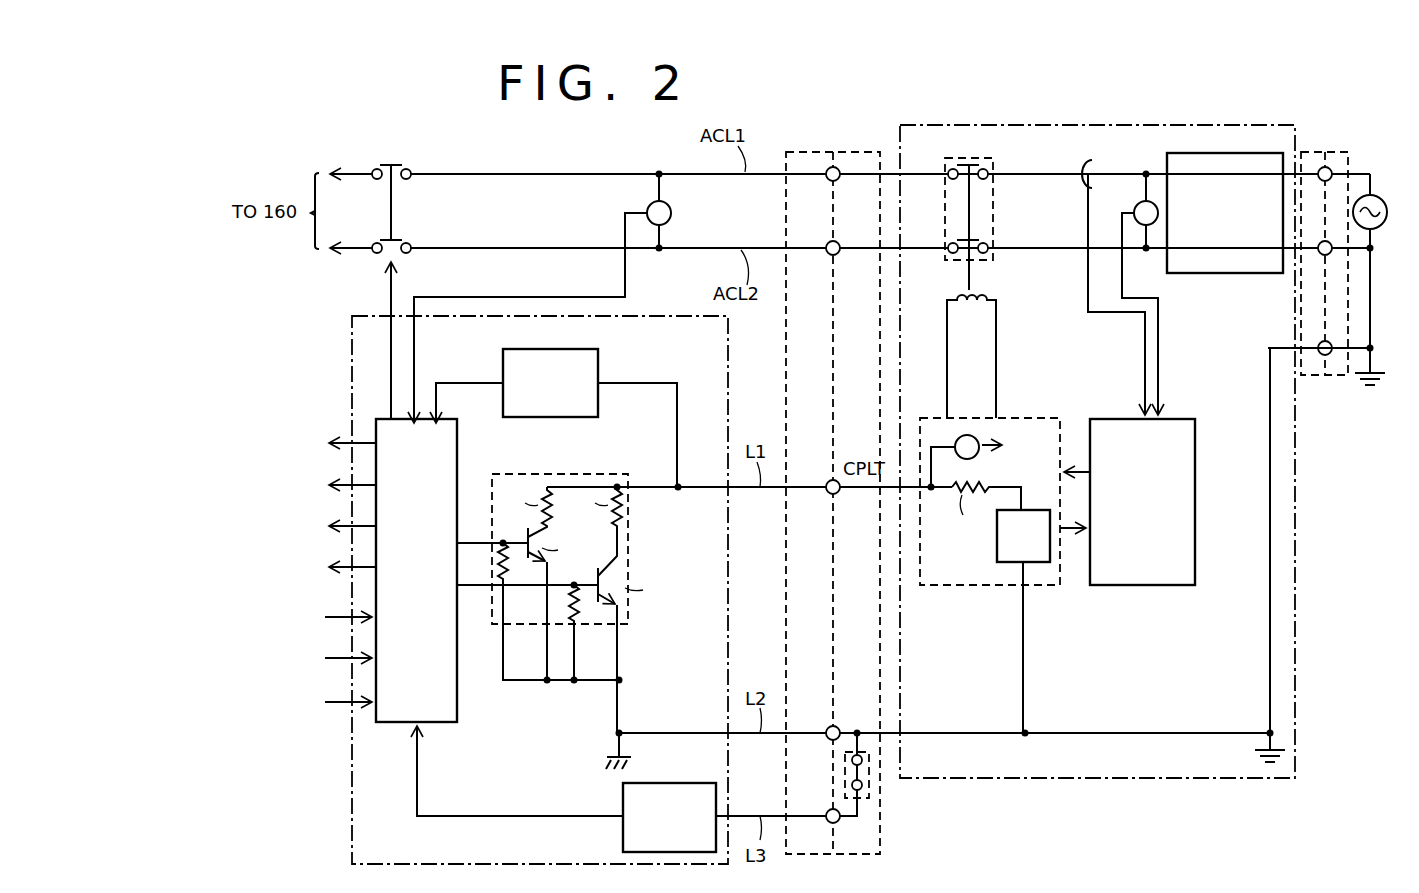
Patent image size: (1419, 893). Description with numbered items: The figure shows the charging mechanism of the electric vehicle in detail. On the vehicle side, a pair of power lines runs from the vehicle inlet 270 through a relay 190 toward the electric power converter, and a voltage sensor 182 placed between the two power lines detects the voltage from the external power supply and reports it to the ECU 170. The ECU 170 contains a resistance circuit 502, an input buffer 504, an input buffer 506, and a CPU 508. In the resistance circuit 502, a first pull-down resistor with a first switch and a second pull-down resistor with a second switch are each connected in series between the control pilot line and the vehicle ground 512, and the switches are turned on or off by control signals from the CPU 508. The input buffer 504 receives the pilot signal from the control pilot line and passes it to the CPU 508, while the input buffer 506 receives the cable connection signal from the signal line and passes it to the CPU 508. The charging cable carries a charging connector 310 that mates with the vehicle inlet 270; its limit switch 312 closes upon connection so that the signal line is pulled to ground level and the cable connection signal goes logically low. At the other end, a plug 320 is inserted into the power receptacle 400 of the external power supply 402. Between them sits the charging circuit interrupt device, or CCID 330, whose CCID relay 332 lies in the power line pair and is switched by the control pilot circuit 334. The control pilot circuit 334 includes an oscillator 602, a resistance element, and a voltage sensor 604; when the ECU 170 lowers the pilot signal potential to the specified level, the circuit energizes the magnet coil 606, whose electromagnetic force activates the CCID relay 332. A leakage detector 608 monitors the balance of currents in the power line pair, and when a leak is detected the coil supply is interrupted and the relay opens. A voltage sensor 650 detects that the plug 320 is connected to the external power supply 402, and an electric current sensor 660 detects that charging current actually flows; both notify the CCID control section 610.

The relay 190 is at (396, 163).
The voltage sensor 182 is at (671, 213).
The ECU 170 is at (682, 316).
The CPU 508 is at (396, 722).
The input buffer 504 is at (540, 349).
The resistance circuit 502 is at (565, 474).
The input buffer 506 is at (655, 783).
The vehicle ground 512 is at (612, 767).
The vehicle inlet 270 is at (797, 152).
The charging connector 310 is at (855, 152).
The limit switch 312 is at (869, 792).
The charging circuit interrupt device (CCID) 330 is at (1200, 125).
The CCID relay 332 is at (969, 155).
The magnet coil 606 is at (958, 295).
The electric current sensor 660 is at (1085, 165).
The voltage sensor 650 is at (1136, 204).
The leakage detector 608 is at (1244, 273).
The plug 320 is at (1310, 152).
The power receptacle 400 is at (1340, 152).
The external power supply 402 is at (1374, 196).
The control pilot circuit 334 is at (989, 575).
The oscillator 602 is at (990, 575).
The voltage sensor 604 is at (980, 452).
The CCID control section 610 is at (1178, 419).